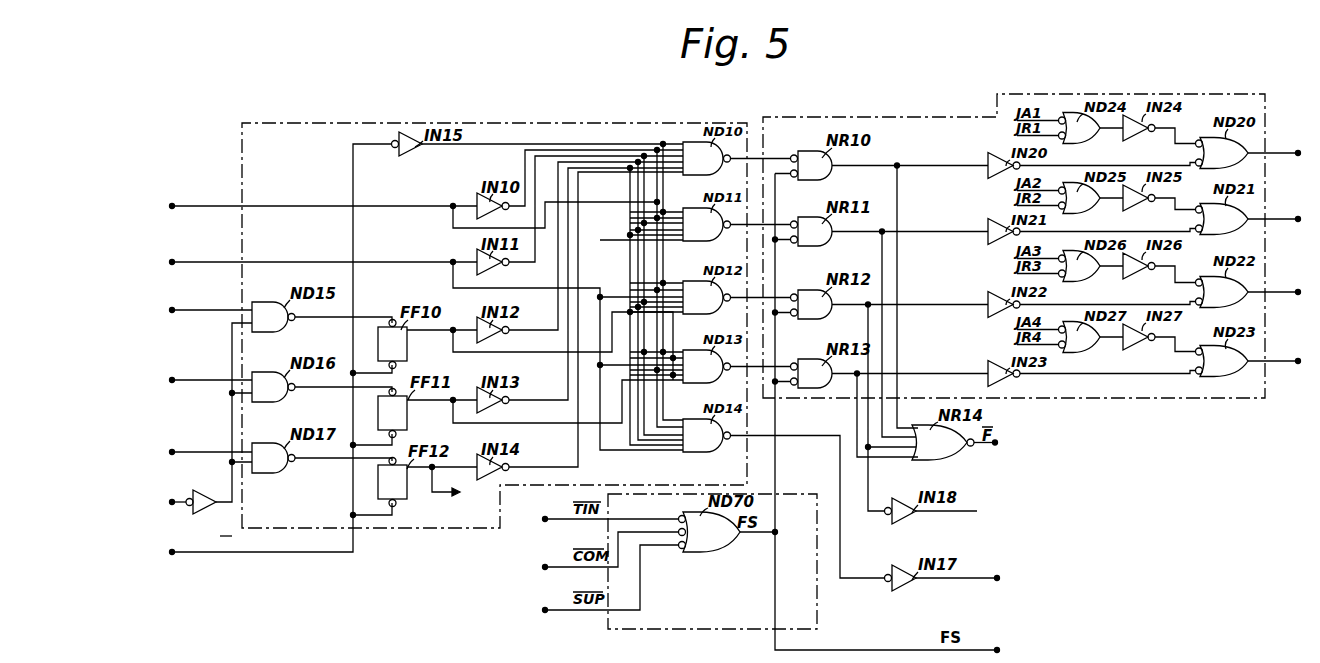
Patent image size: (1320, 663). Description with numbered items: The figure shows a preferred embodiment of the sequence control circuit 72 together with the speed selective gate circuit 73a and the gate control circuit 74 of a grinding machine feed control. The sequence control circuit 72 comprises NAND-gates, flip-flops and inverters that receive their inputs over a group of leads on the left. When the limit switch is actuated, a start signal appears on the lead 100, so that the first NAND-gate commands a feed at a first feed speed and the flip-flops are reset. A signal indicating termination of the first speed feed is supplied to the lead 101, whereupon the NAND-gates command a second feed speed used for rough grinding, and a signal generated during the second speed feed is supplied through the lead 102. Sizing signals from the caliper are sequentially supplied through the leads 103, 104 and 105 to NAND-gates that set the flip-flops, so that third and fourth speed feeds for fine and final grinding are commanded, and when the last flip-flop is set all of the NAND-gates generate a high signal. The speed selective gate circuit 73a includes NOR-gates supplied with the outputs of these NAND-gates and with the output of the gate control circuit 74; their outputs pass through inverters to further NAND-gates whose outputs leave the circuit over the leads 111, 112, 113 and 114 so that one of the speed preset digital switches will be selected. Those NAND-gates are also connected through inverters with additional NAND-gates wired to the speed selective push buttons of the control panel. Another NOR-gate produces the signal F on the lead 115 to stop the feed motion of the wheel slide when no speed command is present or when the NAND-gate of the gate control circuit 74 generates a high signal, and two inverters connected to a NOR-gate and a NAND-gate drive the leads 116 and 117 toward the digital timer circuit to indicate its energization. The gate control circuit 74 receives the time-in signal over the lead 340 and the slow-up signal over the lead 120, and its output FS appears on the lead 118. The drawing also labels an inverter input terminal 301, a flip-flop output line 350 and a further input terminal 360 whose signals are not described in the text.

The sequence control circuit 72 is at (561, 125).
The speed selective gate circuit 73a is at (907, 119).
The gate control circuit 74 is at (805, 494).
The lead 100 is at (174, 549).
The lead 101 is at (174, 203).
The lead 102 is at (174, 259).
The lead 103 is at (174, 307).
The lead 104 is at (174, 377).
The lead 105 is at (174, 449).
The lead 111 is at (1298, 150).
The lead 112 is at (1298, 216).
The lead 113 is at (1298, 289).
The lead 114 is at (1298, 358).
The lead 115 is at (997, 440).
The lead 116 is at (1001, 500).
The lead 117 is at (998, 576).
The lead 118 is at (998, 648).
The lead 120 is at (547, 608).
The inverter input terminal 301 is at (174, 499).
The lead 340 is at (547, 517).
The flip-flop output line 350 is at (462, 494).
The COM-bar input terminal 360 is at (547, 565).